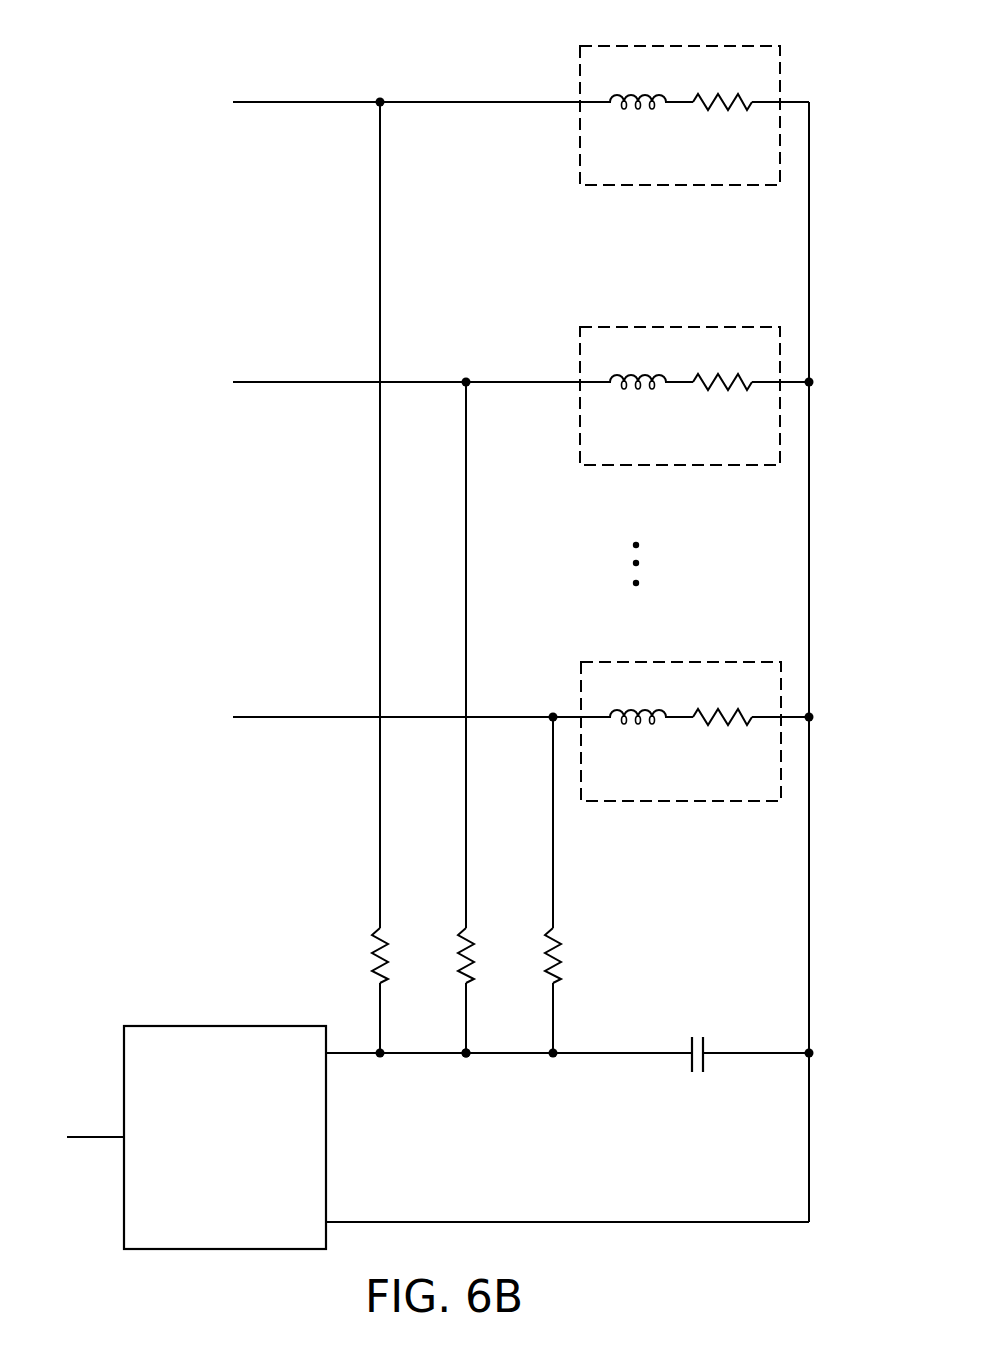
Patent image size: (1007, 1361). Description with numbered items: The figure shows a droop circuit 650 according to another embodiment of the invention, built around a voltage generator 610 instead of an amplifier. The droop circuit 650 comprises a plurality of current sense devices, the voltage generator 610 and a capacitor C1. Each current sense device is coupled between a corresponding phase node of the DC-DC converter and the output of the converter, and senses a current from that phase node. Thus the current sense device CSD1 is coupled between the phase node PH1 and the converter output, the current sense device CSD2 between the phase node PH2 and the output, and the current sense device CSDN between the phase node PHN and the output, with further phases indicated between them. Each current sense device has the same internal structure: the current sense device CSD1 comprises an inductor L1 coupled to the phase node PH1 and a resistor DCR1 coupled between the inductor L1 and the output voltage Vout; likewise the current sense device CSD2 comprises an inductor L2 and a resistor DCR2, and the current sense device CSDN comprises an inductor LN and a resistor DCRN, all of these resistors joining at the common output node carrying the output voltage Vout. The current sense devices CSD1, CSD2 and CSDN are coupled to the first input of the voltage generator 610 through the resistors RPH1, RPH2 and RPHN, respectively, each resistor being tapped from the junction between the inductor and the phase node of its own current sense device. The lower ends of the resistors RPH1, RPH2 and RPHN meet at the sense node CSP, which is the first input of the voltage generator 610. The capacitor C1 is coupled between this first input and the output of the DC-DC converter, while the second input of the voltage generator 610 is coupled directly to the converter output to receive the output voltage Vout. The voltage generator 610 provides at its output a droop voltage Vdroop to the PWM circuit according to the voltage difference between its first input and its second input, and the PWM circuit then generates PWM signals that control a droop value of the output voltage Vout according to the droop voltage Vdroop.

The droop circuit 650 is at (143, 46).
The voltage generator 610 is at (153, 1026).
The capacitor C1 is at (698, 1036).
The non-inverting input CSP is at (468, 1057).
The resistor RPH1 is at (391, 962).
The resistor RPH2 is at (477, 962).
The resistor RPHN is at (565, 960).
The inductor L1 is at (612, 94).
The inductor L2 is at (612, 376).
The inductor LN is at (612, 711).
The resistor DCR1 is at (740, 108).
The resistor DCR2 is at (742, 390).
The resistor DCRN is at (742, 725).
The current sense device CSD1 is at (664, 46).
The current sense device CSD2 is at (664, 327).
The current sense device CSDN is at (665, 662).
The phase node PH1 is at (195, 104).
The phase node PH2 is at (195, 384).
The phase node PHN is at (201, 719).
The output voltage Vout is at (852, 721).
The droop voltage Vdroop is at (65, 1112).